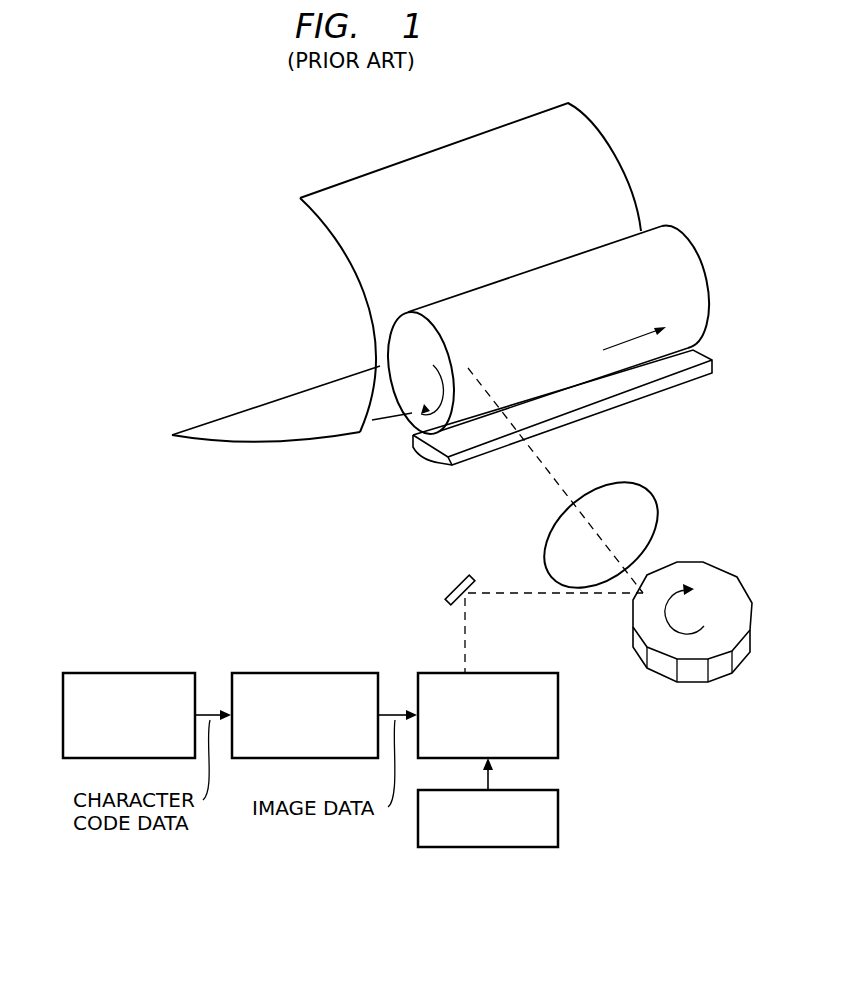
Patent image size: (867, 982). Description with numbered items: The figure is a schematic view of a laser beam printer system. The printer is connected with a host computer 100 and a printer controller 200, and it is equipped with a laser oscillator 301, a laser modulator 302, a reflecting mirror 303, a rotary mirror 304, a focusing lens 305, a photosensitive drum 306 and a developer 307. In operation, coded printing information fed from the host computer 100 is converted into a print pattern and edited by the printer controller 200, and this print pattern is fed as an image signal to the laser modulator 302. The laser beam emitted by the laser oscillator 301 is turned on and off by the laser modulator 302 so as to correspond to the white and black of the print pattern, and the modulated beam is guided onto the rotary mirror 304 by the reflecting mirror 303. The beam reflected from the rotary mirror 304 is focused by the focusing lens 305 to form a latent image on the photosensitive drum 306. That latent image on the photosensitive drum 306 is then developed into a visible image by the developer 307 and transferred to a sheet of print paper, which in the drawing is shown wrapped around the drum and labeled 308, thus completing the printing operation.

The host computer 100 is at (168, 673).
The printer controller 200 is at (348, 673).
The laser oscillator 301 is at (532, 848).
The laser modulator 302 is at (528, 673).
The reflecting mirror 303 is at (452, 589).
The rotary mirror 304 is at (723, 560).
The focusing lens 305 is at (652, 500).
The photosensitive drum 306 is at (690, 250).
The developer 307 is at (697, 375).
The recording paper 308 is at (610, 168).